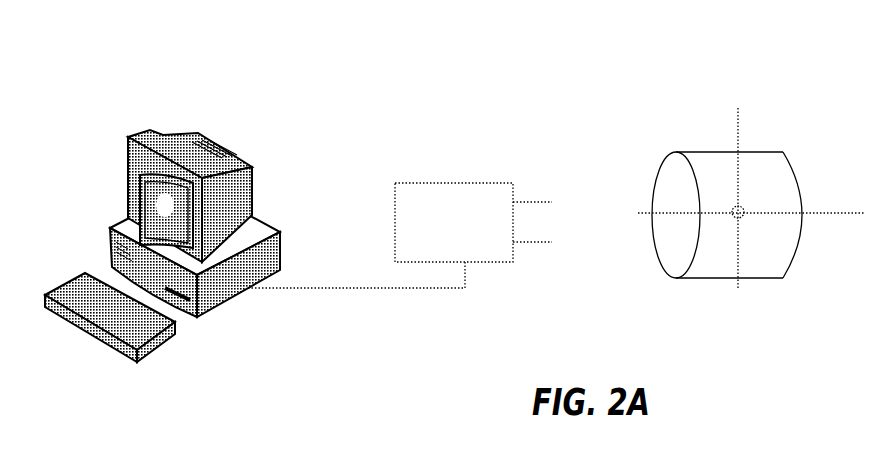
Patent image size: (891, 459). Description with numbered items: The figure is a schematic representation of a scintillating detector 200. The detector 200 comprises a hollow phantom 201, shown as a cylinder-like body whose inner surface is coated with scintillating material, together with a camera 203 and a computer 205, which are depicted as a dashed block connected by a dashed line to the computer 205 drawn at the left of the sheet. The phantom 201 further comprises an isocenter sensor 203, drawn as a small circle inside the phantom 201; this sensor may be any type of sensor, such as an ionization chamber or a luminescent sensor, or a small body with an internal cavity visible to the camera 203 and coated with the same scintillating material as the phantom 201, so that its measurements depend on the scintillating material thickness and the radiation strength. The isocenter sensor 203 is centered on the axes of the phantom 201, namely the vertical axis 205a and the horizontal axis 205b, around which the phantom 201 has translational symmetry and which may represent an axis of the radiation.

The scintillating detector 200 is at (604, 38).
The computer 205 is at (130, 140).
The isocenter sensor 203 is at (410, 230).
The hollow phantom 201 is at (770, 178).
The axis 205a is at (740, 110).
The axis 205b is at (840, 215).